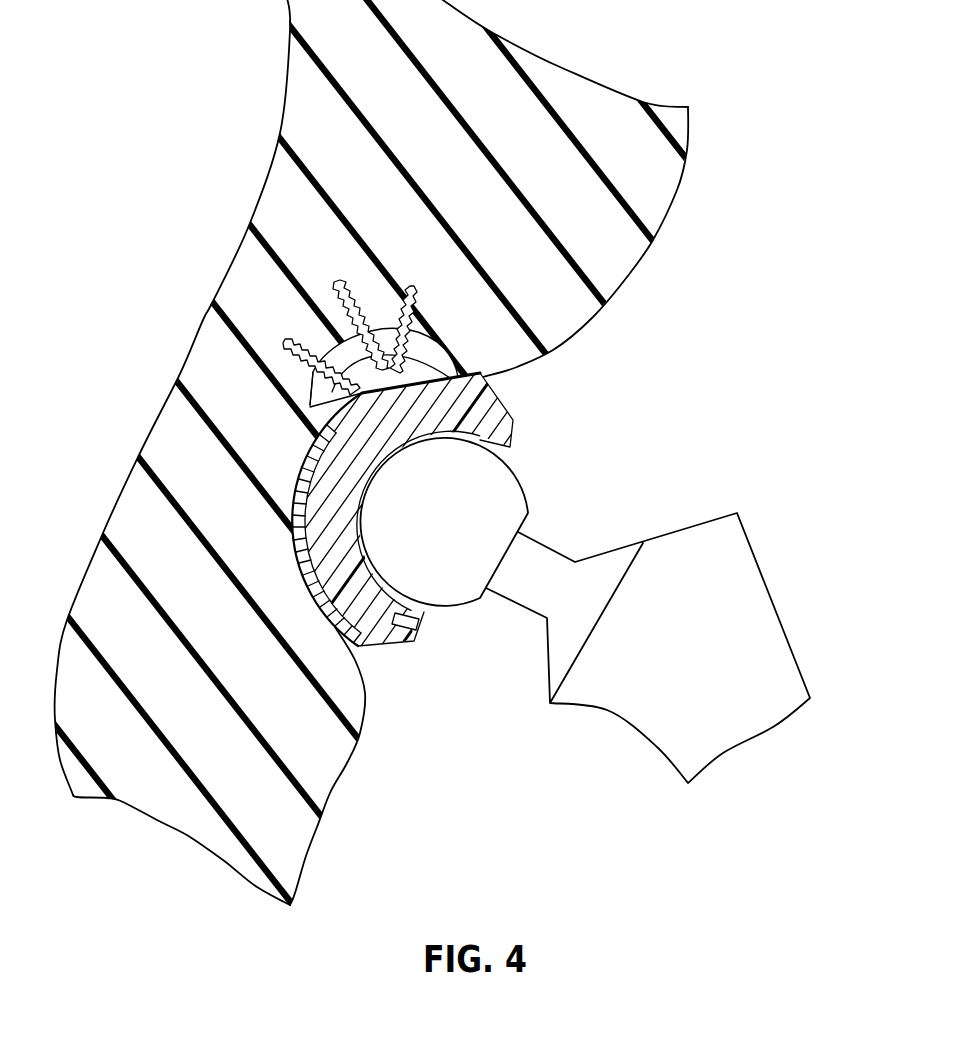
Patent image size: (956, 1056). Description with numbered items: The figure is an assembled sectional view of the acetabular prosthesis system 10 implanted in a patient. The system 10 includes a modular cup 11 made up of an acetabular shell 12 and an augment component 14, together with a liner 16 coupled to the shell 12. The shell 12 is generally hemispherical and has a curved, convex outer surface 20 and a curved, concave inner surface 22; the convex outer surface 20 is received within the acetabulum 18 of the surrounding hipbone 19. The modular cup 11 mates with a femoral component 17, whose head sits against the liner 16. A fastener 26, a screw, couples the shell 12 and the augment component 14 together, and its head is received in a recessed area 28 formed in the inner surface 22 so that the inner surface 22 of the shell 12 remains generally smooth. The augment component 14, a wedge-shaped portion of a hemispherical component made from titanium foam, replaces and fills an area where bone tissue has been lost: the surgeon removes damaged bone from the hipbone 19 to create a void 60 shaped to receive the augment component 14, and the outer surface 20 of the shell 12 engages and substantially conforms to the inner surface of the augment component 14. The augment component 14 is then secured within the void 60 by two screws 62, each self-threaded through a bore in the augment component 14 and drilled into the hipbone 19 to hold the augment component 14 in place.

The acetabular prosthesis system 10 is at (381, 528).
The modular cup 11 is at (331, 640).
The acetabular shell 12 is at (381, 528).
The augment component 14 is at (379, 326).
The liner 16 is at (505, 418).
The femoral component 17 is at (784, 550).
The acetabulum 18 is at (293, 533).
The hipbone 19 is at (662, 198).
The convex outer surface 20 is at (335, 603).
The concave inner surface 22 is at (388, 645).
The fastener 26 is at (333, 282).
The recessed area 28 is at (357, 394).
The void 60 is at (440, 338).
The screws 62 is at (288, 343).